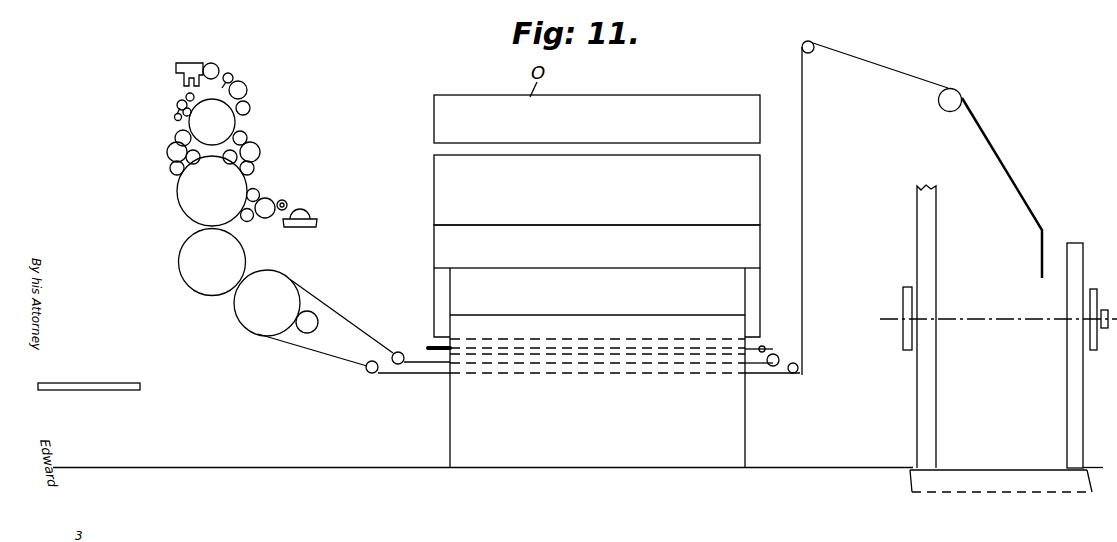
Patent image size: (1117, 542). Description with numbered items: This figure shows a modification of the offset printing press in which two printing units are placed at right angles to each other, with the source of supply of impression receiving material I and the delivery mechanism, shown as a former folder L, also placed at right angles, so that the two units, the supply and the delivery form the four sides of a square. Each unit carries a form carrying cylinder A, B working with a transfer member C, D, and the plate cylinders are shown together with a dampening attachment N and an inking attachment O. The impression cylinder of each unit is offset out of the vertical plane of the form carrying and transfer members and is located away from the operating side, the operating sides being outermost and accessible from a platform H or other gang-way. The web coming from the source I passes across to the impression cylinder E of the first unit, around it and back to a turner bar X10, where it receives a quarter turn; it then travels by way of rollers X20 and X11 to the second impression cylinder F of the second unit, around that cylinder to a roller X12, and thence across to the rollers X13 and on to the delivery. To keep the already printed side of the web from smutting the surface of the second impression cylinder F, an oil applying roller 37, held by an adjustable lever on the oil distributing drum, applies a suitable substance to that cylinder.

The inking attachment O is at (226, 121).
The form carrying cylinder B is at (188, 203).
The dampening attachment N is at (269, 200).
The transfer member D is at (197, 278).
The second impression cylinder F is at (253, 325).
The oil applying roller 37 is at (310, 316).
The roller X11 is at (398, 352).
The roller X12 is at (367, 371).
The turner bar X10 is at (438, 354).
The form carrying cylinder A is at (435, 188).
The transfer member C is at (440, 248).
The impression cylinder E is at (435, 288).
The source of supply of impression receiving material I is at (458, 442).
The former folder L is at (1002, 188).
The roller X20 is at (777, 355).
The rollers X13 is at (800, 372).
The platform H is at (115, 382).